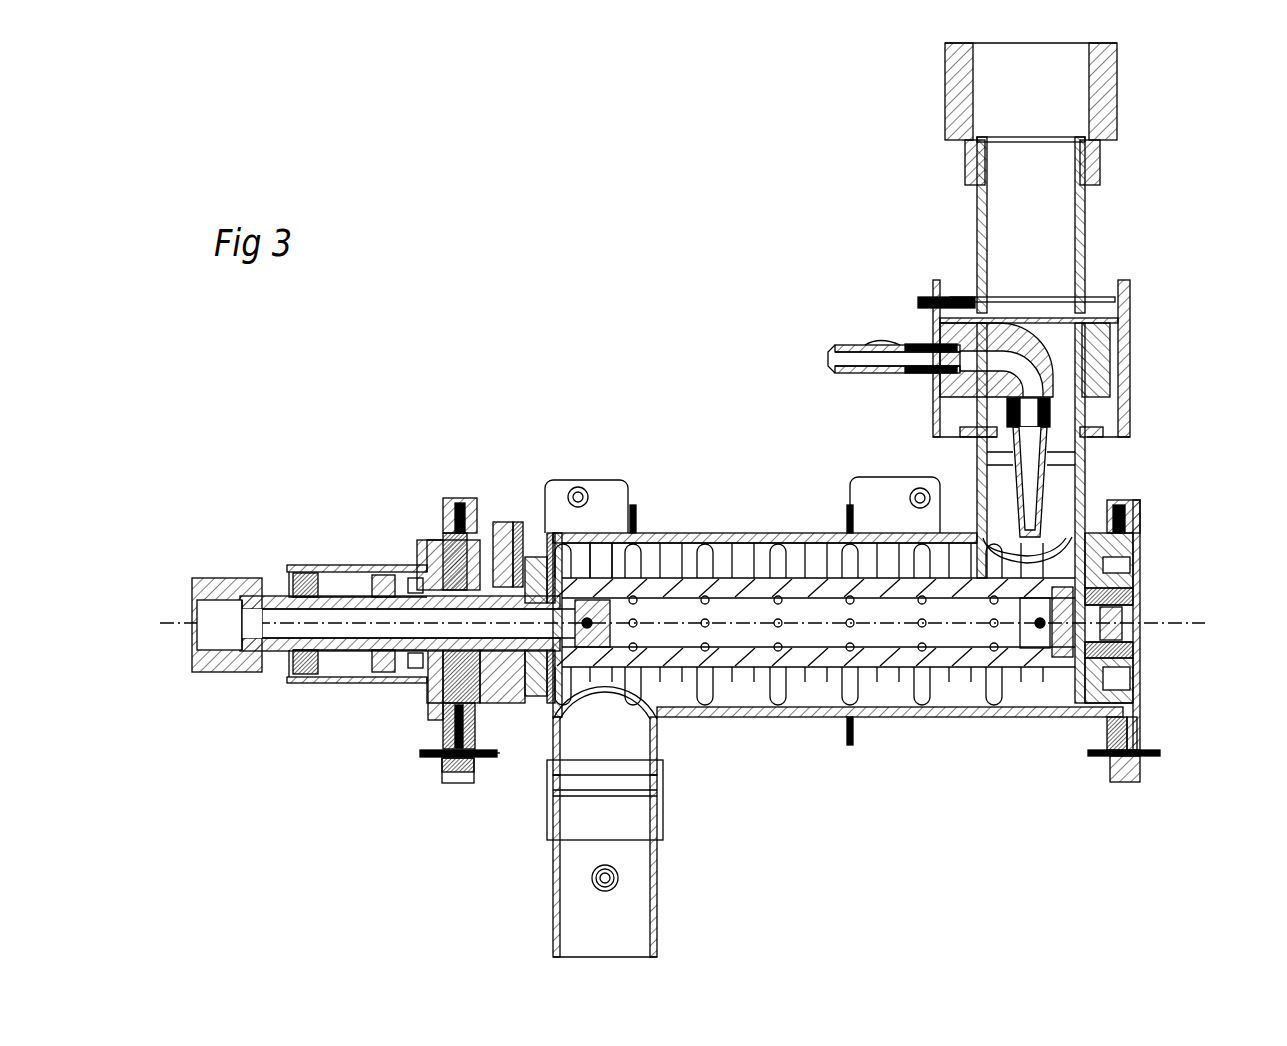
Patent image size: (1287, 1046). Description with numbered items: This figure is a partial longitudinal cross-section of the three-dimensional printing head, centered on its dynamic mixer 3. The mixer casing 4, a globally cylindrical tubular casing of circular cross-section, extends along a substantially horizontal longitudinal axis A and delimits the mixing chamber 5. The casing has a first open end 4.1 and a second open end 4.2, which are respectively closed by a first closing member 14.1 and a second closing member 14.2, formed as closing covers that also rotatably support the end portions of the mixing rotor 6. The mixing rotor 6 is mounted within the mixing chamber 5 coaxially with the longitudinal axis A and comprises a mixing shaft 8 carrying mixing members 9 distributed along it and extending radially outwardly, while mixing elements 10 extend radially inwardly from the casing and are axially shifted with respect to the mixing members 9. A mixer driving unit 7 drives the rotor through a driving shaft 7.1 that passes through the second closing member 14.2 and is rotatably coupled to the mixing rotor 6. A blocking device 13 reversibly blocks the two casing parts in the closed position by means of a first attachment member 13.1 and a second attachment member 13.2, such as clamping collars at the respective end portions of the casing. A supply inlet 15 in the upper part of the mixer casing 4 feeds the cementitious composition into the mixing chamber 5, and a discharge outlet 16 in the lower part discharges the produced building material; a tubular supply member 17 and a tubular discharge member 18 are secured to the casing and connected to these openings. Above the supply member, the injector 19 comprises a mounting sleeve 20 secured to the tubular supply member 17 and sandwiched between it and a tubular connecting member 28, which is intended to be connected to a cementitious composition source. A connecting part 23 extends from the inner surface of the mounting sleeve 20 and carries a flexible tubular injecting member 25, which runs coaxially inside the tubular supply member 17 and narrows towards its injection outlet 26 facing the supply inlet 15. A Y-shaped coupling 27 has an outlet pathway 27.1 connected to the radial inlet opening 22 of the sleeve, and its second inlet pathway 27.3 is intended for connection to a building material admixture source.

The longitudinal axis A is at (176, 612).
The dynamic mixer 3 is at (742, 508).
The mixer casing 4 is at (965, 712).
The first open end 4.1 is at (1119, 697).
The second open end 4.2 is at (440, 690).
The mixing chamber 5 is at (838, 555).
The mixing rotor 6 is at (826, 655).
The mixer driving unit 7 is at (300, 555).
The driving shaft 7.1 is at (360, 645).
The mixing shaft 8 is at (962, 660).
The mixing members 9 is at (636, 560).
The mixing elements 10 is at (822, 555).
The blocking device 13 is at (487, 788).
The first attachment member 13.1 is at (1113, 783).
The second attachment member 13.2 is at (457, 777).
The first closing member 14.1 is at (1140, 532).
The second closing member 14.2 is at (446, 527).
The supply inlet 15 is at (990, 537).
The discharge outlet 16 is at (651, 708).
The tubular supply member 17 is at (1084, 470).
The tubular discharge member 18 is at (656, 877).
The injector 19 is at (1111, 314).
The mounting sleeve 20 is at (1098, 349).
The inlet opening 22 is at (952, 350).
The connecting part 23 is at (1064, 347).
The tubular injecting member 25 is at (1012, 482).
The injection outlet 26 is at (1043, 553).
The Y-shaped coupling 27 is at (845, 343).
The outlet pathway 27.1 is at (915, 360).
The second inlet pathway 27.3 is at (848, 356).
The tubular connecting member 28 is at (1010, 205).